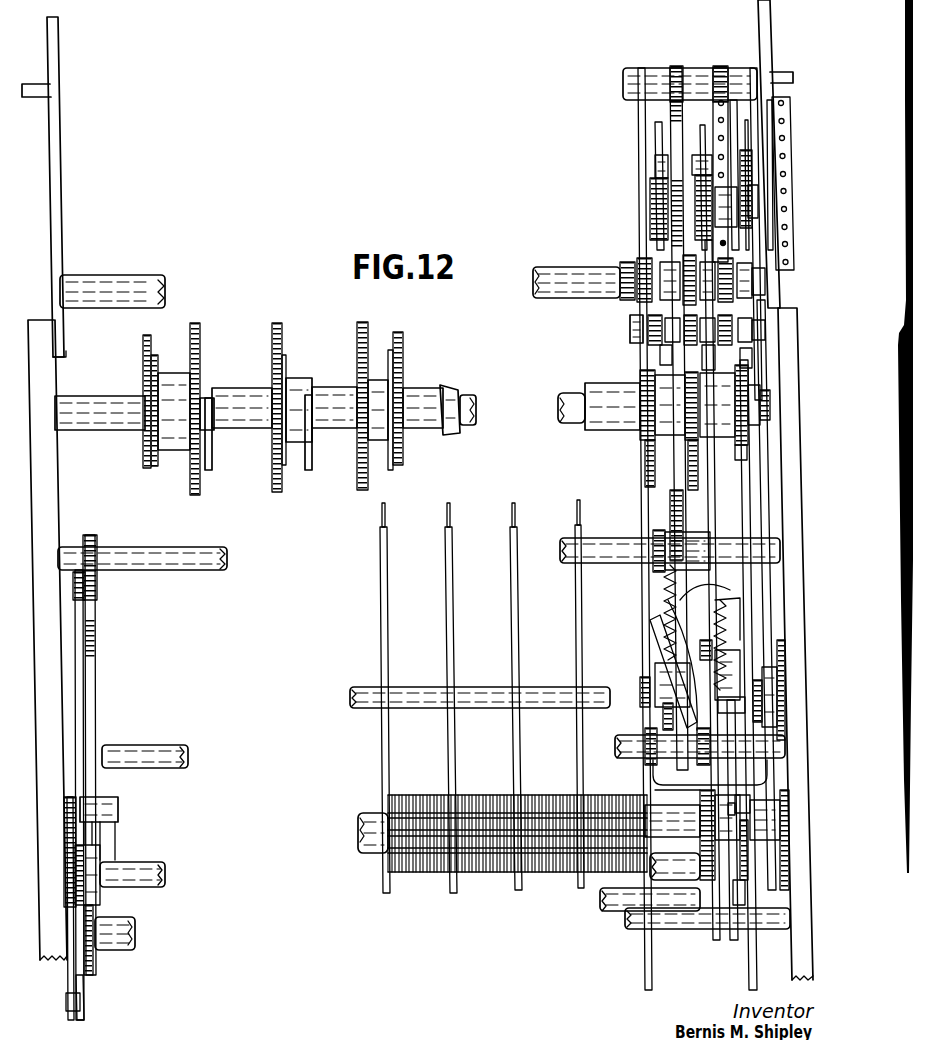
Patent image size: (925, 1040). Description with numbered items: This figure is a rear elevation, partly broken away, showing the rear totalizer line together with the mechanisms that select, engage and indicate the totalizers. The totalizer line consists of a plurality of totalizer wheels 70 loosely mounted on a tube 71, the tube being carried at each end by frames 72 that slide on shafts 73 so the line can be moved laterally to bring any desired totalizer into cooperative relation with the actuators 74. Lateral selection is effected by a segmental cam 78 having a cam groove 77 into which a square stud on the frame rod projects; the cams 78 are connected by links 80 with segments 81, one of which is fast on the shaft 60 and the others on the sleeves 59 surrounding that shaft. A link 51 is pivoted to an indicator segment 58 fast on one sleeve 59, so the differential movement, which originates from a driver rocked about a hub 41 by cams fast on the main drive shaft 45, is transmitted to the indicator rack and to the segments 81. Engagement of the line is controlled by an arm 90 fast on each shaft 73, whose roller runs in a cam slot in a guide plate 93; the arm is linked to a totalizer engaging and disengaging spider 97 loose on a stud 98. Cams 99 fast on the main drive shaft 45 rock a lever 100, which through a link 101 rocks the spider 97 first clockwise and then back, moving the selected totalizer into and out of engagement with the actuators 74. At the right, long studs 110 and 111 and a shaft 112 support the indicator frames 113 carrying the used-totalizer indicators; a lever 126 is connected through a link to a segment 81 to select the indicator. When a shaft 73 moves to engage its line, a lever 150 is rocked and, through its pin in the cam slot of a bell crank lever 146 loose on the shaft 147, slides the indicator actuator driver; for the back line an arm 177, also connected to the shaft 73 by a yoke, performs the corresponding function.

The hub 41 is at (403, 688).
The main drive shaft 45 is at (128, 920).
The link 51 is at (210, 463).
The indicator segment 58 is at (277, 330).
The sleeve 59 is at (440, 388).
The shaft 60 is at (476, 410).
The totalizer wheels 70 is at (445, 877).
The tube 71 is at (382, 856).
The frames 72 is at (738, 803).
The shafts 73 is at (145, 862).
The actuators 74 is at (448, 505).
The cam groove 77 is at (740, 600).
The segmental cam 78 is at (656, 636).
The links 80 is at (706, 492).
The segments 81 is at (645, 452).
The arm 90 is at (100, 800).
The guide plate 93 is at (68, 830).
The totalizer engaging and disengaging spider 97 is at (96, 664).
The stud 98 is at (141, 748).
The cams 99 is at (93, 968).
The lever 100 is at (83, 978).
The link 101 is at (75, 664).
The long stud 110 is at (624, 82).
The long stud 111 is at (630, 332).
The shaft 112 is at (612, 268).
The indicator frames 113 is at (722, 66).
The lever 126 is at (740, 460).
The bell crank lever 146 is at (668, 588).
The shaft 147 is at (178, 548).
The lever 150 is at (700, 795).
The arm 177 is at (712, 757).